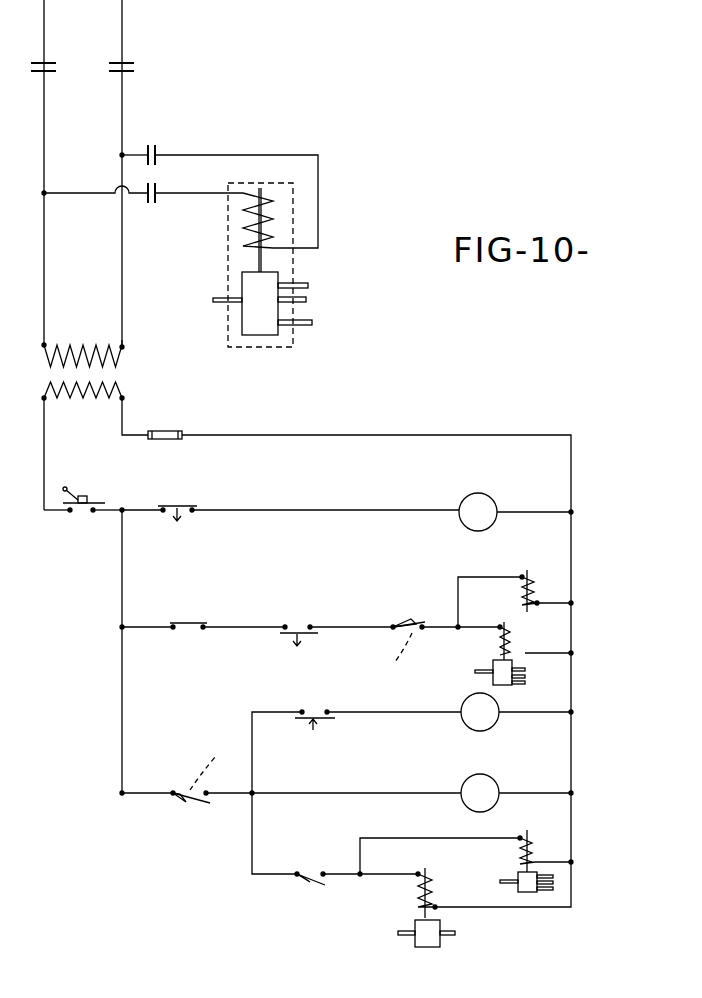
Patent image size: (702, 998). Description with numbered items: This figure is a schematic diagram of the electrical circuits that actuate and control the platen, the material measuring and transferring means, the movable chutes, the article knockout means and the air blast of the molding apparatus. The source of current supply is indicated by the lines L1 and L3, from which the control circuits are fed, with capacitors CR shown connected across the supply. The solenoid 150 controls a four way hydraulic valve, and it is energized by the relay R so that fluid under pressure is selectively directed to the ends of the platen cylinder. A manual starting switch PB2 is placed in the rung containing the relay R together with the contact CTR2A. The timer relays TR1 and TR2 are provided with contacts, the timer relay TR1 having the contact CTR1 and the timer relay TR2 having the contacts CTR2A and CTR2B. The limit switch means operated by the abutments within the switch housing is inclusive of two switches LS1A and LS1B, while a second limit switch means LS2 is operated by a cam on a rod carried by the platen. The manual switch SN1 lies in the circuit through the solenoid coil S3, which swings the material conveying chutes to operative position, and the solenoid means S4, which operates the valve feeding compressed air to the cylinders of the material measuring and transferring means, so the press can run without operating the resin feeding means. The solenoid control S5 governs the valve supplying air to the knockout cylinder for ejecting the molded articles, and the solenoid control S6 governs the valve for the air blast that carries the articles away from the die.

The current supply line L1 is at (49, 50).
The current supply line L3 is at (128, 50).
The control relay capacitors CR is at (220, 192).
The solenoid 150 is at (290, 225).
The manual starting switch PB2 is at (83, 514).
The timer relay contact CTR2A is at (177, 504).
The relay R is at (478, 512).
The manual switch SN1 is at (188, 638).
The timer relay contact CTR2B is at (292, 626).
The limit switch LS1B is at (405, 630).
The solenoid coil S3 is at (515, 598).
The solenoid means S4 is at (524, 653).
The timer relay TR2 is at (480, 712).
The timer relay contact CTR1 is at (325, 731).
The timer relay TR1 is at (480, 793).
The limit switch LS1A is at (181, 794).
The limit switch means LS2 is at (305, 891).
The solenoid control S5 is at (536, 861).
The solenoid control S6 is at (428, 907).